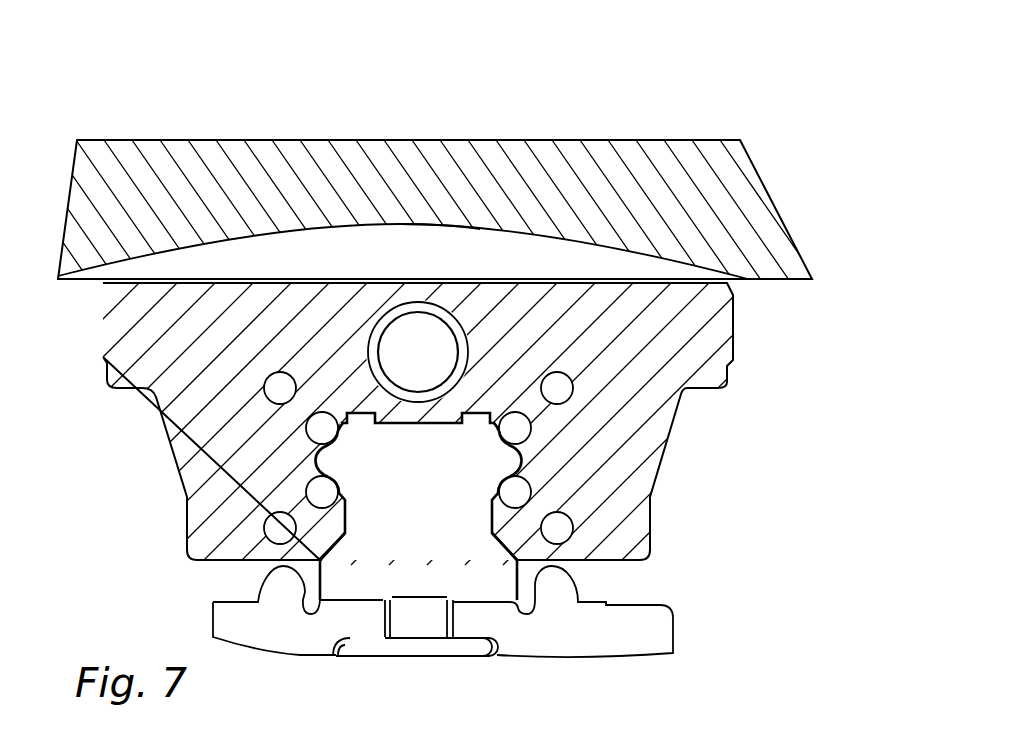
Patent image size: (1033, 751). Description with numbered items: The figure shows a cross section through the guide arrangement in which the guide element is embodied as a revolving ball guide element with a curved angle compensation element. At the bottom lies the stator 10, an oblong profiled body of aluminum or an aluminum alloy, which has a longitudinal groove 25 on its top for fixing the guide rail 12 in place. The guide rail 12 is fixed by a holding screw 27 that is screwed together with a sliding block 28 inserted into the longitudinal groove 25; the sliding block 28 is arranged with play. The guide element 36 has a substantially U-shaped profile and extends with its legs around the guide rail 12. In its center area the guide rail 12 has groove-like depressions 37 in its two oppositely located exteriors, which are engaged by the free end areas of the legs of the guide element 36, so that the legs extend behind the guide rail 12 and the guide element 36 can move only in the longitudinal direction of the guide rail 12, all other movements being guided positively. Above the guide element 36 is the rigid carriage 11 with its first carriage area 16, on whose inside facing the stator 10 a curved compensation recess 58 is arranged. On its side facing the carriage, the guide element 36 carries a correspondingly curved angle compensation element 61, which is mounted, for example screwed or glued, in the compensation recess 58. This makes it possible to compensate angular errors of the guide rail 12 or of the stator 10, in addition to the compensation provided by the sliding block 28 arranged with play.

The stator 10 is at (633, 635).
The rigid carriage 11 is at (780, 181).
The guide rail 12 is at (450, 472).
The first carriage area 16 is at (678, 163).
The longitudinal groove 25 is at (333, 646).
The holding screw 27 is at (420, 620).
The sliding block 28 is at (470, 652).
The guide element 36 is at (190, 406).
The groove-like depression 37 is at (345, 533).
The compensation recess 58 is at (440, 244).
The angle compensation element 61 is at (350, 250).